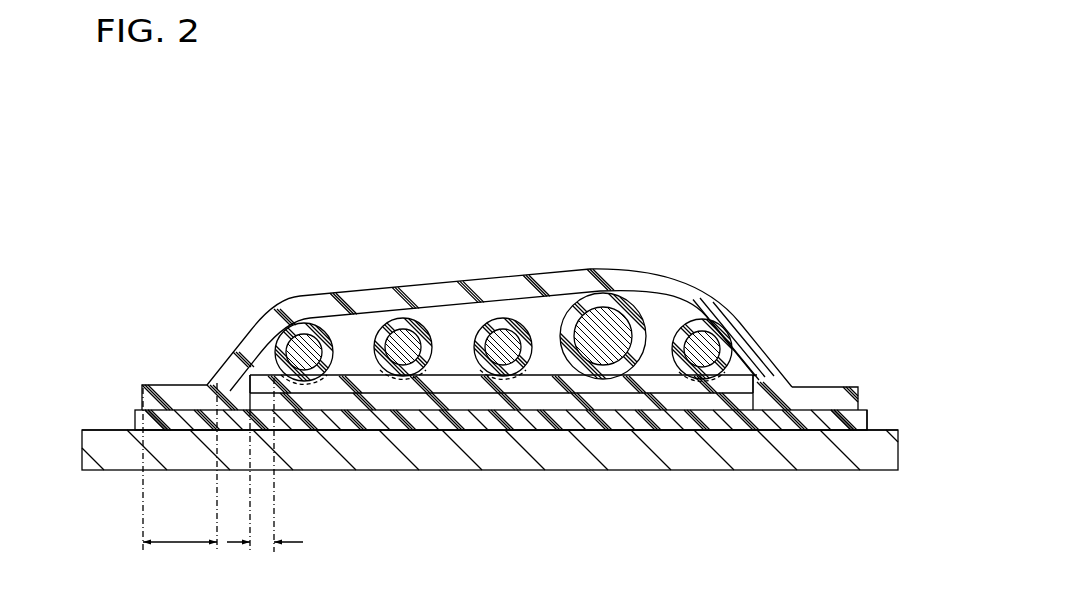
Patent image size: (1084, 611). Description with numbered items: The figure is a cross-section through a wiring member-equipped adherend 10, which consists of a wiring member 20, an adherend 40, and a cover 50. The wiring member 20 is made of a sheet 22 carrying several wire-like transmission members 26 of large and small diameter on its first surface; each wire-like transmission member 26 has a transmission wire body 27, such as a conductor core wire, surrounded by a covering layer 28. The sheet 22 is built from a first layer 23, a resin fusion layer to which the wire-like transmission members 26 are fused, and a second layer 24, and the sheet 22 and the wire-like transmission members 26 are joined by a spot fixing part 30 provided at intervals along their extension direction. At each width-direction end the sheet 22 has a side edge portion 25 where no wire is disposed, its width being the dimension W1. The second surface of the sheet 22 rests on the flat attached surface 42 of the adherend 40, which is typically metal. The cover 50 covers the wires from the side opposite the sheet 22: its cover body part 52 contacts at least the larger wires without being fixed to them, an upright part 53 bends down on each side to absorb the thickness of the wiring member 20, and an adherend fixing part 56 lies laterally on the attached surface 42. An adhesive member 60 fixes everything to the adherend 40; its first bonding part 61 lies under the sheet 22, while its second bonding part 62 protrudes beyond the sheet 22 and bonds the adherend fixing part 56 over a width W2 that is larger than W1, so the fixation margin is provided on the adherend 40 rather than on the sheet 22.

The wiring member-equipped adherend 10 is at (205, 142).
The wiring member 20 is at (505, 302).
The sheet 22 is at (502, 425).
The first layer 23 is at (661, 398).
The second layer 24 is at (610, 385).
The side edge portion 25 is at (258, 378).
The wire-like transmission member 26 is at (505, 298).
The transmission wire body 27 is at (300, 333).
The covering layer 28 is at (270, 240).
The spot fixing part 30 is at (640, 373).
The adherend 40 is at (426, 453).
The attached surface 42 is at (108, 427).
The cover 50 is at (539, 300).
The cover body part 52 is at (547, 276).
The upright part 53 is at (232, 352).
The adherend fixing part 56 is at (193, 393).
The adhesive member 60 is at (873, 418).
The first bonding part 61 is at (513, 422).
The second bonding part 62 is at (158, 392).